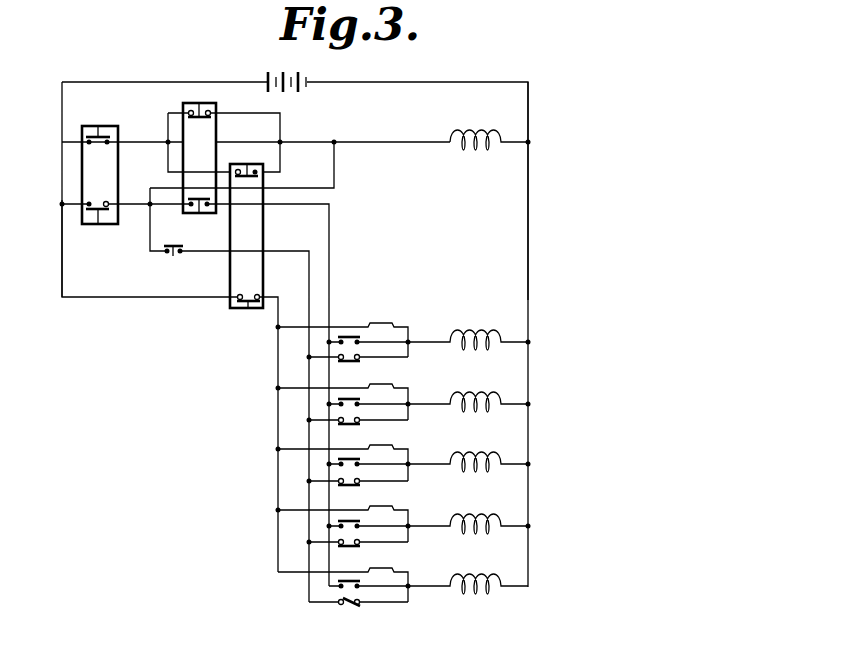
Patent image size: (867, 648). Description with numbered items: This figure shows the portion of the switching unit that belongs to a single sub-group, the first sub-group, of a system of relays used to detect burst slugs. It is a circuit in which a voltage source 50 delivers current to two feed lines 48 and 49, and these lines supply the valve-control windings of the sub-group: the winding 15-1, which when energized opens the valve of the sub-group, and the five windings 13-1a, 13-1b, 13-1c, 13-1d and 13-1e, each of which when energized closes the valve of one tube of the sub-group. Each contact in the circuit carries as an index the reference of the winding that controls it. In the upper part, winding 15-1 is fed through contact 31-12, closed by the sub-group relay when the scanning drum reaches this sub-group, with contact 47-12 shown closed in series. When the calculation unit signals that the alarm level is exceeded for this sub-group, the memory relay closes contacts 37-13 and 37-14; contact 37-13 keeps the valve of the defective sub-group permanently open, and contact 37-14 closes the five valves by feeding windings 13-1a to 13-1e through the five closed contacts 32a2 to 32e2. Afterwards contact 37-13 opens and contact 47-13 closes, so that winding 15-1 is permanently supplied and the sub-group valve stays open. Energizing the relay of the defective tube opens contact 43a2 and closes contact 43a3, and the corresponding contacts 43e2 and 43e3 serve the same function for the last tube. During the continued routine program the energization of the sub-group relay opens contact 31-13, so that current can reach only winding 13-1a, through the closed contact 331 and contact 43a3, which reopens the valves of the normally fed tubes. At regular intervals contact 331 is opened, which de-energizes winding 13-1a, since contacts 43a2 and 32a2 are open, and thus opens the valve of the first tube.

The voltage source 50 is at (300, 72).
The contact 47-I2 47-12 is at (100, 119).
The contact 47-I3 47-13 is at (98, 224).
The contact 31-I2 31-12 is at (199, 103).
The contact 31-I3 31-13 is at (199, 213).
The contact 37-I3 37-13 is at (250, 157).
The contact 37-I4 37-14 is at (248, 308).
The contact 33-1 331 is at (173, 256).
The feed line 48 is at (62, 263).
The feed line 49 is at (528, 176).
The winding 15-I 15-1 is at (476, 125).
The winding 13-Ia 13-1a is at (472, 326).
The winding 13-Ib 13-1b is at (472, 390).
The winding 13-Ic 13-1c is at (472, 450).
The winding 13-Id 13-1d is at (468, 516).
The winding 13-Ie 13-1e is at (478, 570).
The contact 43a2 is at (349, 336).
The contact 43a3 is at (343, 362).
The contact 32a2 is at (388, 322).
The contact 43e2 is at (349, 580).
The contact 43e3 is at (309, 597).
The contact 32e2 is at (388, 568).